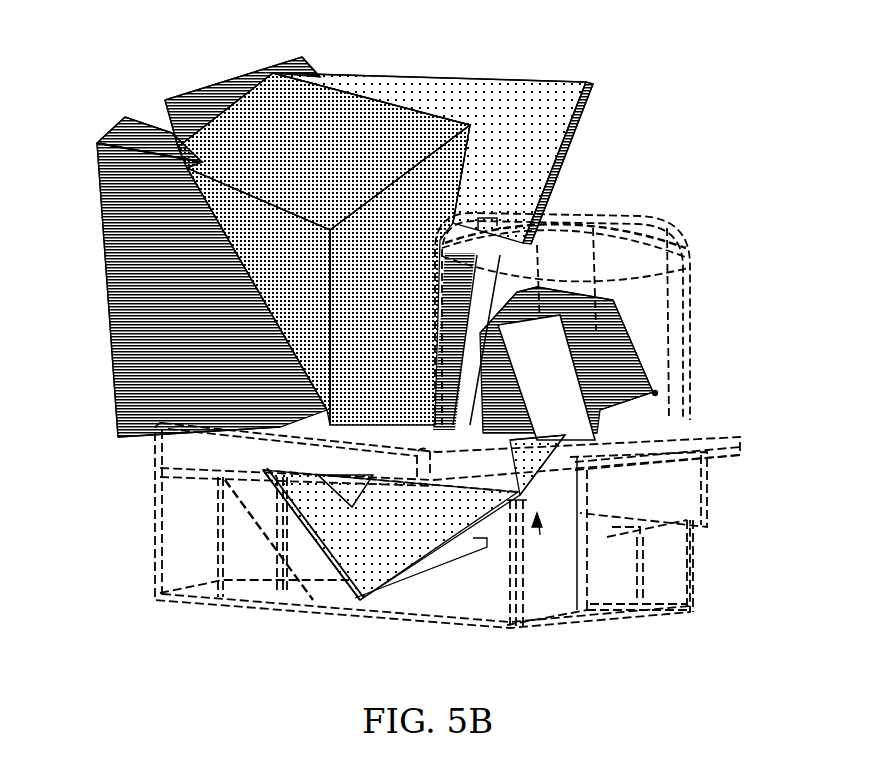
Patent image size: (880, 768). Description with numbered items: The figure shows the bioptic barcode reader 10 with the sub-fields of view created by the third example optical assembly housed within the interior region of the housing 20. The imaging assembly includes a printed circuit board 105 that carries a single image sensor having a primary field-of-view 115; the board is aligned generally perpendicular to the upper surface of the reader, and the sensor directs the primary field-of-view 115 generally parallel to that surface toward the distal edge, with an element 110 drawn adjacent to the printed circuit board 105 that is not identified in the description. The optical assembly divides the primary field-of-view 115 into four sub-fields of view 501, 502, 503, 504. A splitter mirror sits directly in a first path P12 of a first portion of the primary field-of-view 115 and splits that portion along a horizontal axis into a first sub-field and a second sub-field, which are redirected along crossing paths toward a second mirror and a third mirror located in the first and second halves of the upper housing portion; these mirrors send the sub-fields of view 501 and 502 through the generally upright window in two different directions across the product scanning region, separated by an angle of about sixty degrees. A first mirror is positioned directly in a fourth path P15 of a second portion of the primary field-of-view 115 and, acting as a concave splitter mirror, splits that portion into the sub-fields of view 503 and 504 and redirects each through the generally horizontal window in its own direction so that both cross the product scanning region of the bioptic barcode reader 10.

The bioptic barcode reader 10 is at (729, 145).
The housing 20 is at (717, 243).
The printed circuit board 105 is at (650, 563).
The bracket 110 is at (692, 532).
The primary field-of-view 115 is at (542, 536).
The sub-field of view 501 is at (233, 87).
The sub-field of view 502 is at (113, 137).
The sub-field of view 503 is at (517, 102).
The sub-field of view 504 is at (302, 318).
The first path P12 is at (517, 500).
The fourth path P15 is at (433, 563).